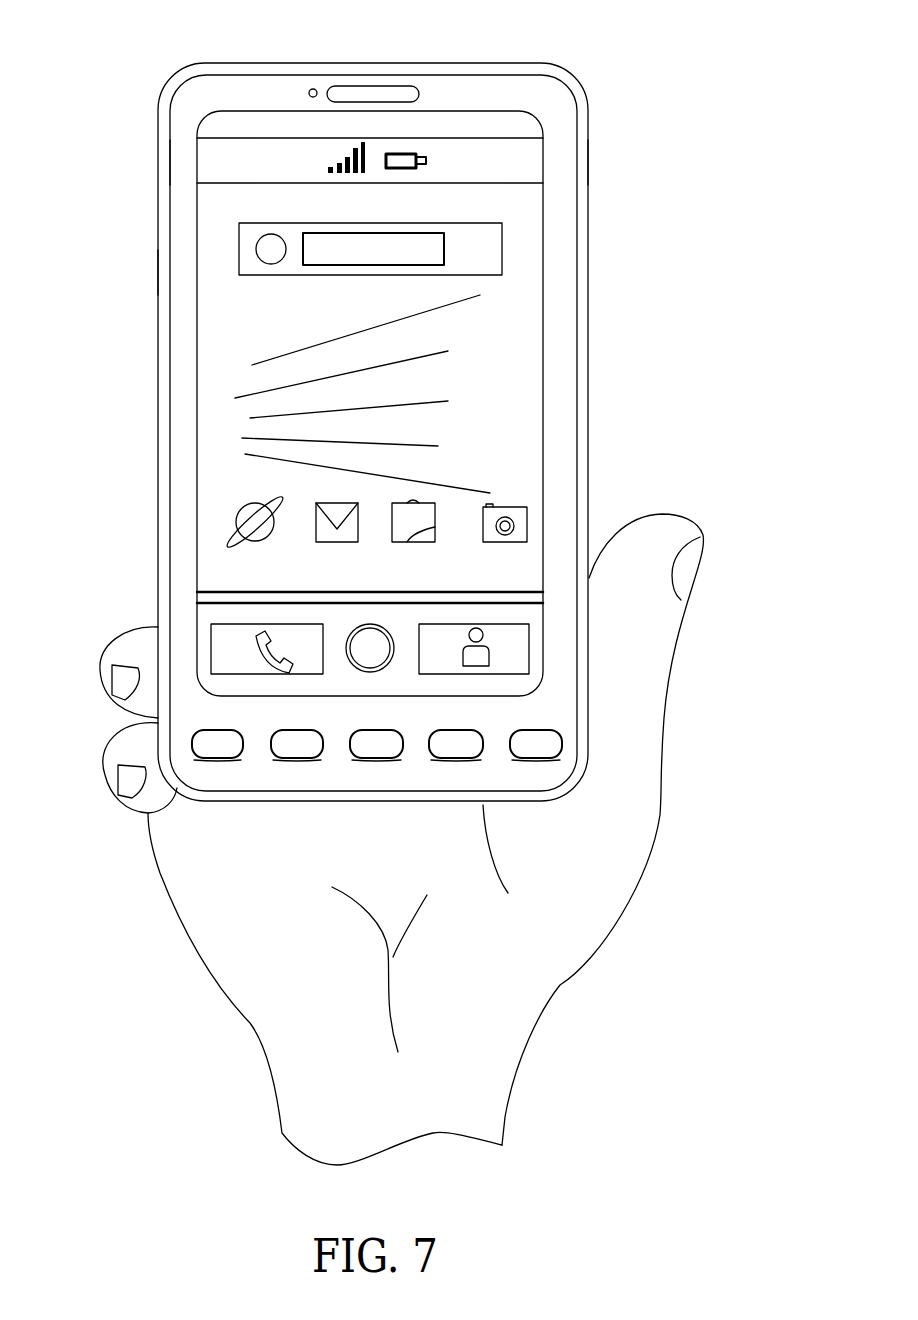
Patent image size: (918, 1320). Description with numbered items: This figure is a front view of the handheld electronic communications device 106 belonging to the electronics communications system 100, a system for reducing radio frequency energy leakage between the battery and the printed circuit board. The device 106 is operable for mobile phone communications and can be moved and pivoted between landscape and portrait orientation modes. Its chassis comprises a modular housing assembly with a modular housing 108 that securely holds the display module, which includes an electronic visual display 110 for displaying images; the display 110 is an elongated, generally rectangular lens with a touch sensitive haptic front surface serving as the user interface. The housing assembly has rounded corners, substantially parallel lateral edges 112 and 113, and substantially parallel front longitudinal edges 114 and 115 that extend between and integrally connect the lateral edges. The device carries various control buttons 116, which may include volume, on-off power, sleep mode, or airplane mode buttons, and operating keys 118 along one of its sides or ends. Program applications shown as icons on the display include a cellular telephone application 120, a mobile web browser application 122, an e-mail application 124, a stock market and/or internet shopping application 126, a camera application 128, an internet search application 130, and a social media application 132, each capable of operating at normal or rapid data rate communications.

The electronics communications system 100 is at (668, 44).
The electronic communications device 106 is at (172, 79).
The modular housing 108 is at (169, 161).
The electronic visual display 110 is at (259, 392).
The lateral edge 112 is at (373, 62).
The lateral edge 113 is at (228, 802).
The front longitudinal edge 114 is at (157, 271).
The front longitudinal edge 115 is at (589, 160).
The control buttons 116 is at (363, 672).
The operating keys 118 is at (560, 750).
The cellular telephone application 120 is at (250, 632).
The mobile web browser application 122 is at (233, 520).
The e-mail application 124 is at (333, 502).
The stock market and/or internet shopping application 126 is at (410, 508).
The camera application 128 is at (508, 506).
The internet search application 130 is at (418, 256).
The social media application 132 is at (490, 655).